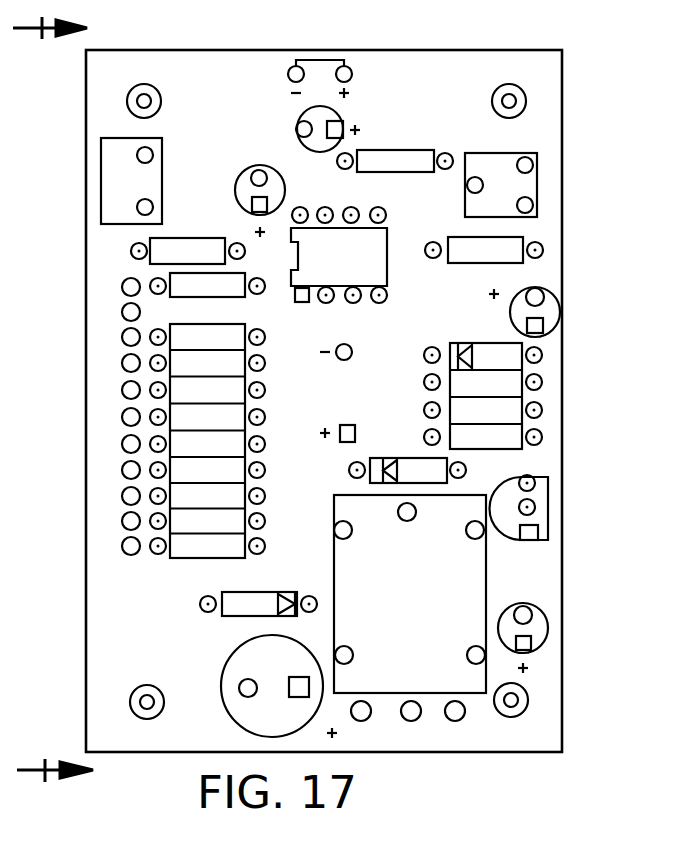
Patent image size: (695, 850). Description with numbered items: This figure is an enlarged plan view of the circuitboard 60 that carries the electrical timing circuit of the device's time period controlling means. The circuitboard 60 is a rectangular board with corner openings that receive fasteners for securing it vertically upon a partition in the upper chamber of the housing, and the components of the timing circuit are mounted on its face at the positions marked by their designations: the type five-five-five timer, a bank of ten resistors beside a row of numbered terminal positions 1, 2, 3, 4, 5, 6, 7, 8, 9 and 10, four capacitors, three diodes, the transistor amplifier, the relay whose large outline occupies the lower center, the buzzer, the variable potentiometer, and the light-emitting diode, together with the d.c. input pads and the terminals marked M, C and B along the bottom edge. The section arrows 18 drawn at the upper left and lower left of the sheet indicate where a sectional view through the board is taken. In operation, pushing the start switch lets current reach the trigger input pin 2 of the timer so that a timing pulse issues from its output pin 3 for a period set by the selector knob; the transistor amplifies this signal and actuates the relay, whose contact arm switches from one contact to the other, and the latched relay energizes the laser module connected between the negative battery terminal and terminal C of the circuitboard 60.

The circuitboard 60 is at (462, 48).
The section line 18 is at (52, 399).
The terminal hole 1 is at (123, 300).
The trigger input pin 2 is at (136, 337).
The output pin 3 is at (136, 363).
The terminal hole 4 is at (136, 390).
The terminal hole 5 is at (136, 417).
The terminal hole 6 is at (136, 444).
The terminal hole 7 is at (136, 470).
The terminal hole 8 is at (136, 496).
The terminal hole 9 is at (136, 521).
The terminal hole 10 is at (129, 546).